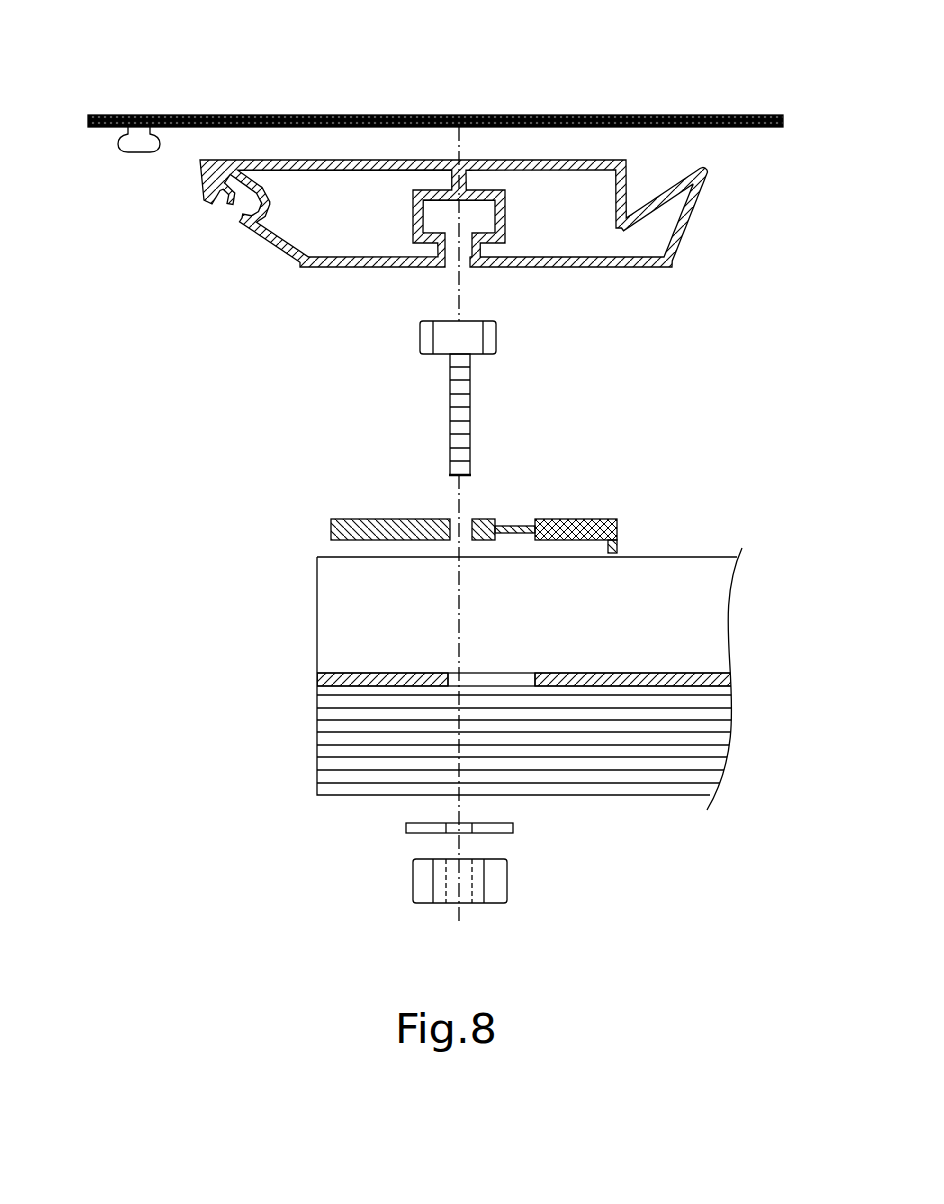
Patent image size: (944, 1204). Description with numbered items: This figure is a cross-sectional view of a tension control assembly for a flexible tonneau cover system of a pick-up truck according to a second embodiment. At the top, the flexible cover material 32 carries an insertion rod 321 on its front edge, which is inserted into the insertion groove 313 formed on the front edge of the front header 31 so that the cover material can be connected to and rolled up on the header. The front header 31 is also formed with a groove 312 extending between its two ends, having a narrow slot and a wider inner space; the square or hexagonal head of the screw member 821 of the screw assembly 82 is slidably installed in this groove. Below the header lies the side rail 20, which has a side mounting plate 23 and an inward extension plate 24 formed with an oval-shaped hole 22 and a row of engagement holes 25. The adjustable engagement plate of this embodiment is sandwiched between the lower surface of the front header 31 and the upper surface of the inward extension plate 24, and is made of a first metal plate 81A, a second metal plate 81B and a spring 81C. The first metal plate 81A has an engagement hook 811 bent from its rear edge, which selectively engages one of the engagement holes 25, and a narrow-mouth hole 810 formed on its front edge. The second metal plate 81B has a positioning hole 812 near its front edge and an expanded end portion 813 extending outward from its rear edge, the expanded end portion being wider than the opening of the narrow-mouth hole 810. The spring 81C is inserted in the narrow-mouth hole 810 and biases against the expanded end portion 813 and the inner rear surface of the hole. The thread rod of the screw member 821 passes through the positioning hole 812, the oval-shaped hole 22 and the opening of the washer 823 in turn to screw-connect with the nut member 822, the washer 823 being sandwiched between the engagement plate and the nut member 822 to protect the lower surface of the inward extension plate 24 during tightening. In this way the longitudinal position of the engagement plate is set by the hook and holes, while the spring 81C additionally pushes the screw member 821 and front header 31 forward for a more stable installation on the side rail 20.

The side rail 20 is at (536, 679).
The oval-shaped hole 22 is at (505, 672).
The side mounting plate 23 is at (320, 740).
The inward extension plate 24 is at (501, 650).
The engagement holes 25 is at (677, 673).
The front header 31 is at (252, 161).
The groove 312 is at (450, 224).
The insertion groove 313 is at (222, 209).
The flexible cover material 32 is at (283, 115).
The insertion rod 321 is at (128, 156).
The first metal plate 81A is at (627, 466).
The second metal plate 81B is at (493, 519).
The spring 81C is at (579, 541).
The narrow-mouth hole 810 is at (613, 519).
The engagement hook 811 is at (617, 545).
The positioning hole 812 is at (452, 519).
The expanded end portion 813 is at (538, 518).
The screw assembly 82 is at (395, 398).
The screw member 821 is at (395, 352).
The nut member 822 is at (413, 884).
The washer 823 is at (406, 829).